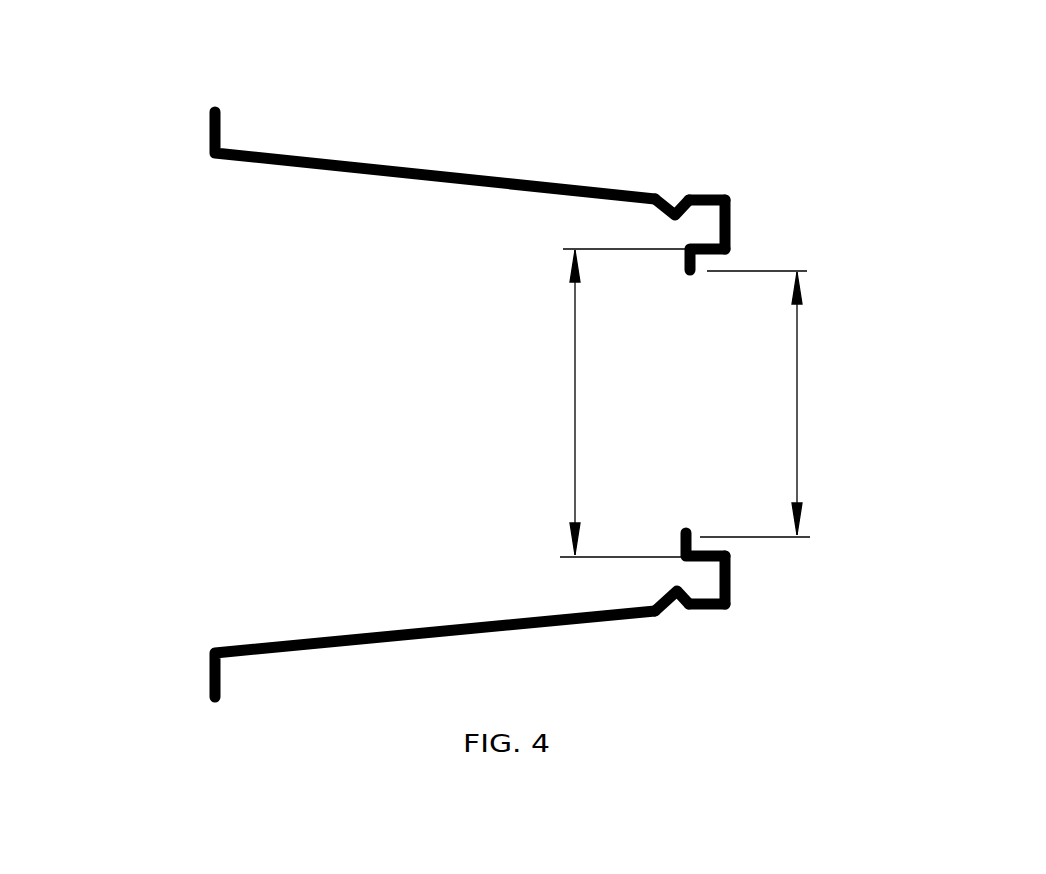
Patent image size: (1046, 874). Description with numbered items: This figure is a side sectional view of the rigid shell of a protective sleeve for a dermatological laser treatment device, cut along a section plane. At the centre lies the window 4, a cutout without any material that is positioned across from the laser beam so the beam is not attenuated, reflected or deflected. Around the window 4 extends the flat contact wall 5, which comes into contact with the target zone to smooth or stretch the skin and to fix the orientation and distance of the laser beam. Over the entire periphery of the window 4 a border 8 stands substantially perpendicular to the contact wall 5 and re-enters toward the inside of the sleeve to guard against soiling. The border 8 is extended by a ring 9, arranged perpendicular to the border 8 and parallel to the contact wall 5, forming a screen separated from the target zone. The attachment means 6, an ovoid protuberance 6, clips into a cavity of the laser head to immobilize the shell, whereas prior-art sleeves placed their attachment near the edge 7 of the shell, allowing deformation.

The window 4 is at (692, 357).
The contact wall 5 is at (733, 238).
The attachment means (protuberance) 6 is at (674, 203).
The edge 7 is at (209, 121).
The border 8 is at (633, 348).
The ring 9 is at (633, 348).